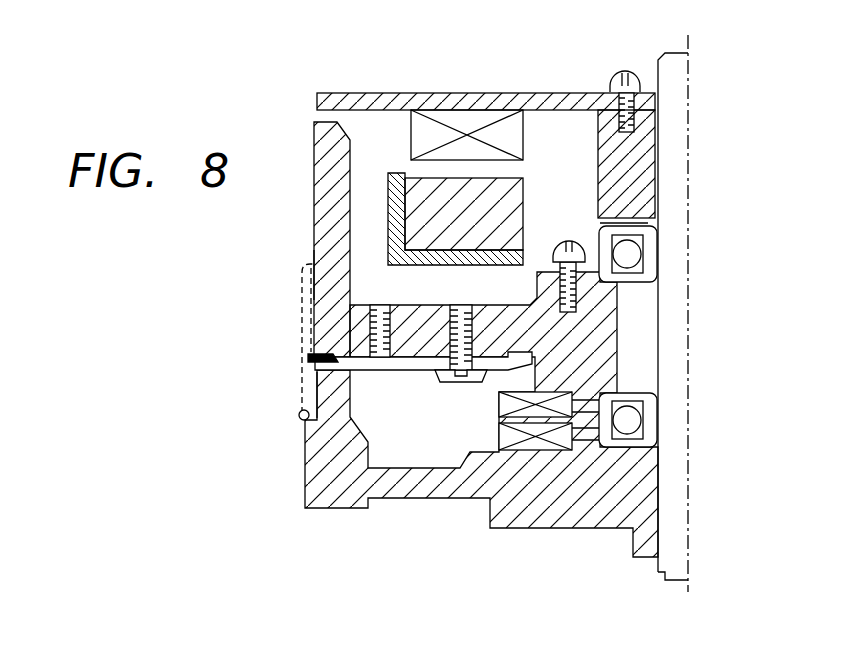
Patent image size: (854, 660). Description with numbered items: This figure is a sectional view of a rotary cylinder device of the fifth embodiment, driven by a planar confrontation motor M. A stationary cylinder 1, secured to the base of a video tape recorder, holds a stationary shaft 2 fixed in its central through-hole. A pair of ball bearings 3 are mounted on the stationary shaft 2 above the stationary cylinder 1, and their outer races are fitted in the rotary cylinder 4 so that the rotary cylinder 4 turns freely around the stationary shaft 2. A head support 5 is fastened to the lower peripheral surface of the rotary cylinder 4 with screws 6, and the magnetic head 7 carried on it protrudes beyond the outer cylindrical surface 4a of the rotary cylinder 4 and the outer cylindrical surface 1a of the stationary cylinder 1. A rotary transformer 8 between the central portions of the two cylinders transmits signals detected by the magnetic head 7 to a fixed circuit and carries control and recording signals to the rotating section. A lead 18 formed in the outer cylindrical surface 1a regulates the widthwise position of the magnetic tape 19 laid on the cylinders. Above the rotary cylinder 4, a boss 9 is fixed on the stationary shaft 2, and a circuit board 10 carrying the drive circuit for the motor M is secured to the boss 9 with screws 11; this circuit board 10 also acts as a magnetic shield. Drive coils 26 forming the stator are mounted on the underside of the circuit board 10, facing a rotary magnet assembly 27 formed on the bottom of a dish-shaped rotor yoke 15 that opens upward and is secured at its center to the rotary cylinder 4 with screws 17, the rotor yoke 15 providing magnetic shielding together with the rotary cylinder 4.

The stationary cylinder 1 is at (310, 493).
The outer cylindrical surface of the stationary cylinder 1a is at (315, 393).
The stationary shaft 2 is at (673, 497).
The ball bearing 3 is at (647, 257).
The rotary cylinder 4 is at (315, 230).
The outer cylindrical surface of the rotary cylinder 4a is at (312, 262).
The head support 5 is at (383, 372).
The screw 6 is at (438, 385).
The magnetic head 7 is at (310, 360).
The rotary transformer 8 is at (497, 408).
The boss 9 is at (607, 135).
The circuit board 10 is at (547, 100).
The screw 11 is at (630, 78).
The rotor yoke 15 is at (387, 183).
The screw 17 is at (593, 290).
The lead 18 is at (300, 427).
The magnetic tape 19 is at (304, 318).
The drive coil 26 is at (468, 120).
The rotary magnet assembly 27 is at (428, 187).
The motor M is at (320, 86).